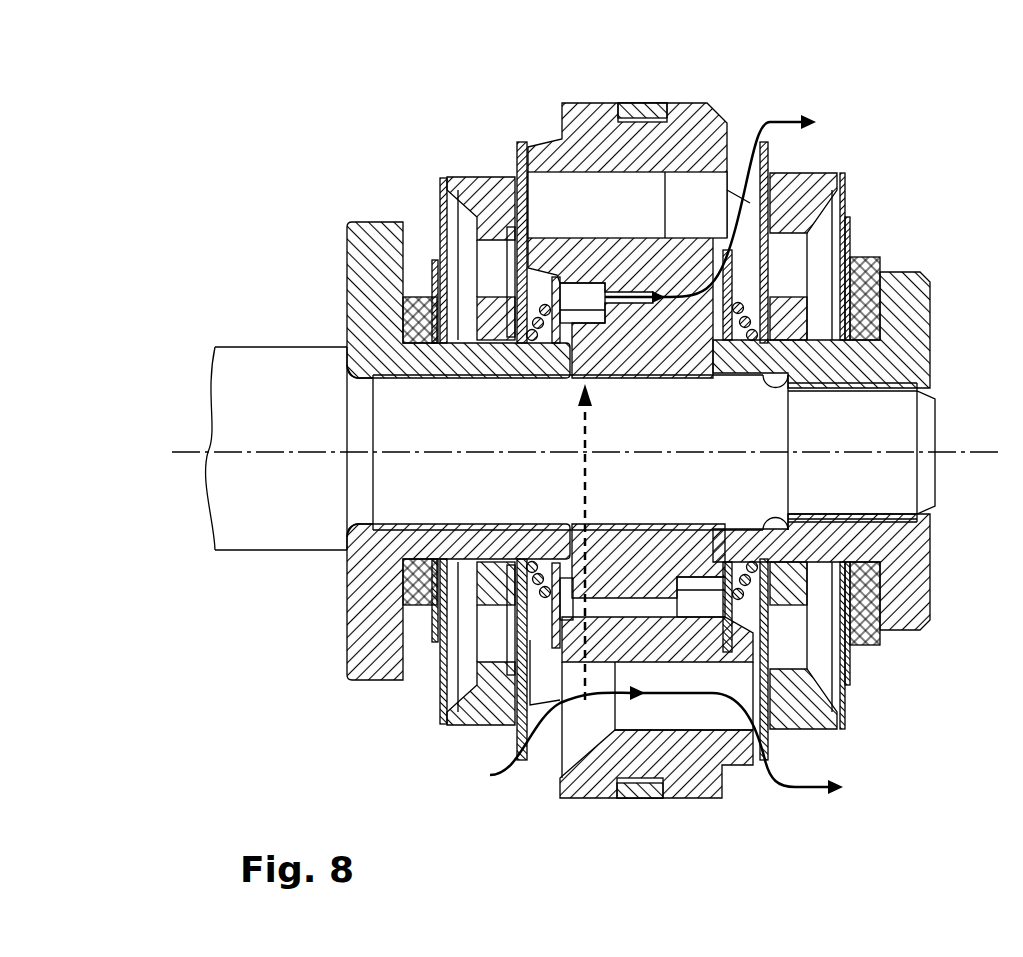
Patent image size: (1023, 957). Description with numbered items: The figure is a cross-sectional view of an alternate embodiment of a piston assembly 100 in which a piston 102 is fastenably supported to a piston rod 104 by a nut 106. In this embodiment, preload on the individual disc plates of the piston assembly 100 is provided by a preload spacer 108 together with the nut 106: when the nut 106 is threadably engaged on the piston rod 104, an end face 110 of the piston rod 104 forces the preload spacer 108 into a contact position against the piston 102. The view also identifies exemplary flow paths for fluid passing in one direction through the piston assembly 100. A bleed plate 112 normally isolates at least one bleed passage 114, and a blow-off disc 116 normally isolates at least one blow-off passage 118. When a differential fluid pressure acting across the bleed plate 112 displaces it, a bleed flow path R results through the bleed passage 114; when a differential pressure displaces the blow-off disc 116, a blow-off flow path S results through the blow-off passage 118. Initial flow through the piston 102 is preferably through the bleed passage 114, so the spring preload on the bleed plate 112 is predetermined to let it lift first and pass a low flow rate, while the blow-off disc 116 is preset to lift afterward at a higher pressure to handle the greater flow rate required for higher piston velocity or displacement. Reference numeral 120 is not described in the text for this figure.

The piston assembly 100 is at (283, 195).
The piston 102 is at (582, 782).
The piston rod 104 is at (252, 362).
The nut 106 is at (900, 302).
The preload spacer 108 is at (357, 645).
The end face 110 is at (345, 522).
The bleed plate 112 is at (735, 285).
The bleed passage 114 is at (627, 291).
The blow-off disc 116 is at (770, 712).
The blow-off passage 118 is at (709, 713).
The splines 120 is at (441, 262).